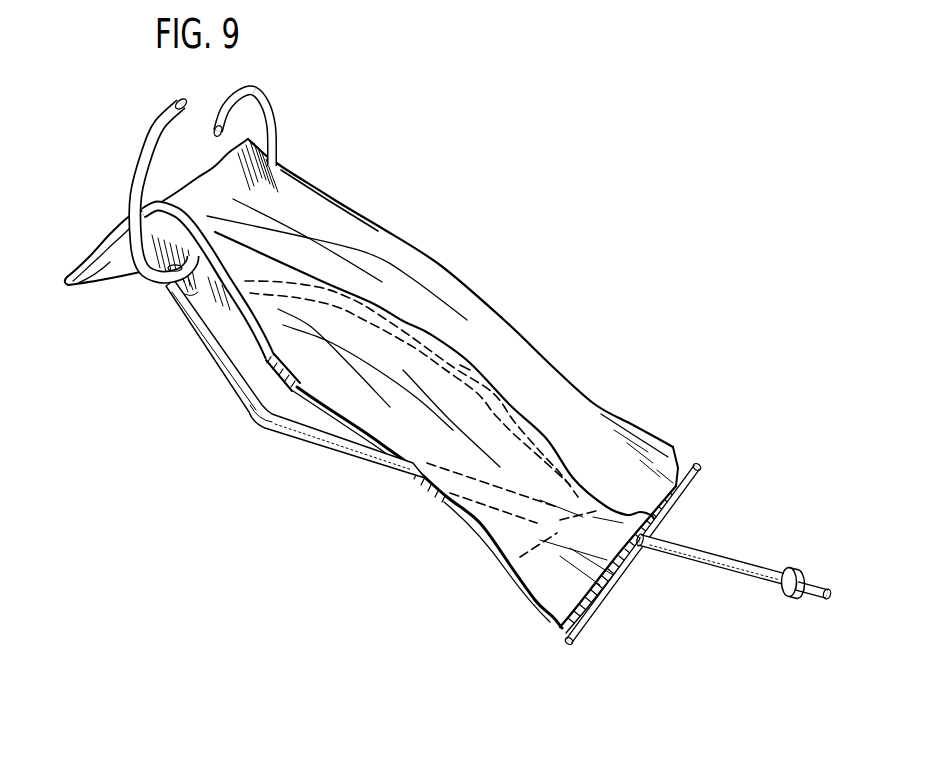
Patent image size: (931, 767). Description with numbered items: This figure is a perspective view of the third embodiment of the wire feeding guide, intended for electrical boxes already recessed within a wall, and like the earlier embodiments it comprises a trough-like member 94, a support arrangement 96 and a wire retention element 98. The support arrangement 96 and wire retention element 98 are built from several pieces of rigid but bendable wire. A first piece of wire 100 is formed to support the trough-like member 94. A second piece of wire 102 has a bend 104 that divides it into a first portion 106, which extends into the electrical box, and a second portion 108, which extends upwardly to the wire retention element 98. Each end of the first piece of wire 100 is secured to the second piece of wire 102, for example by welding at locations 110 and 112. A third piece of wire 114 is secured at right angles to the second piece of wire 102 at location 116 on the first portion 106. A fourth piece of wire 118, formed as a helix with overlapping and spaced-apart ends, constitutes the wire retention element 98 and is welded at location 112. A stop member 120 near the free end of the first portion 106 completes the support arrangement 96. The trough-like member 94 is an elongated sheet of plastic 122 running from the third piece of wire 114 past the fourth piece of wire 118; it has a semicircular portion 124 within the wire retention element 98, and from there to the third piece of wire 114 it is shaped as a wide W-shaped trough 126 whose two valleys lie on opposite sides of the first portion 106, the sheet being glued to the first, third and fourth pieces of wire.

The trough-like member 94 is at (448, 262).
The support arrangement 96 is at (344, 461).
The wire retention element 98 is at (274, 101).
The first piece of wire 100 is at (458, 375).
The second piece of wire 102 is at (230, 378).
The bend 104 is at (267, 427).
The first portion 106 is at (717, 547).
The second portion 108 is at (208, 356).
The welding location 110 is at (497, 575).
The welding location 112 is at (182, 288).
The third piece of wire 114 is at (701, 466).
The securing location 116 is at (656, 541).
The fourth piece of wire 118 is at (279, 134).
The stop member 120 is at (817, 538).
The elongated sheet of plastic 122 is at (377, 240).
The semicircular portion 124 is at (283, 195).
The W-shaped trough 126 is at (524, 415).